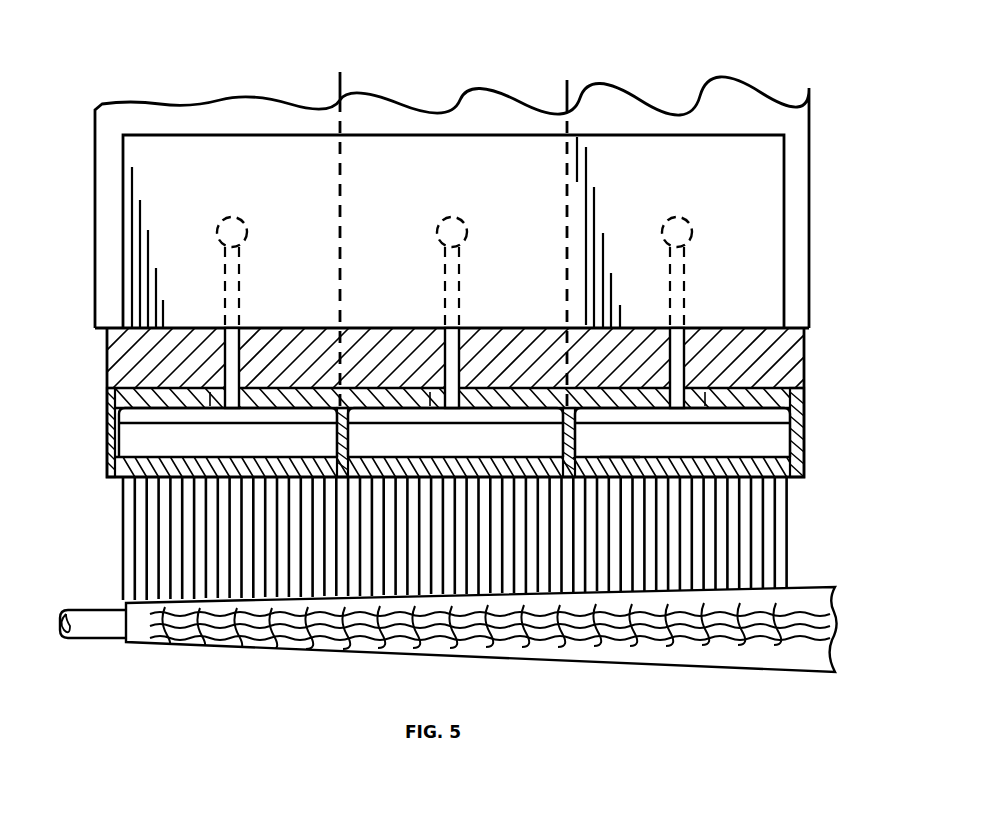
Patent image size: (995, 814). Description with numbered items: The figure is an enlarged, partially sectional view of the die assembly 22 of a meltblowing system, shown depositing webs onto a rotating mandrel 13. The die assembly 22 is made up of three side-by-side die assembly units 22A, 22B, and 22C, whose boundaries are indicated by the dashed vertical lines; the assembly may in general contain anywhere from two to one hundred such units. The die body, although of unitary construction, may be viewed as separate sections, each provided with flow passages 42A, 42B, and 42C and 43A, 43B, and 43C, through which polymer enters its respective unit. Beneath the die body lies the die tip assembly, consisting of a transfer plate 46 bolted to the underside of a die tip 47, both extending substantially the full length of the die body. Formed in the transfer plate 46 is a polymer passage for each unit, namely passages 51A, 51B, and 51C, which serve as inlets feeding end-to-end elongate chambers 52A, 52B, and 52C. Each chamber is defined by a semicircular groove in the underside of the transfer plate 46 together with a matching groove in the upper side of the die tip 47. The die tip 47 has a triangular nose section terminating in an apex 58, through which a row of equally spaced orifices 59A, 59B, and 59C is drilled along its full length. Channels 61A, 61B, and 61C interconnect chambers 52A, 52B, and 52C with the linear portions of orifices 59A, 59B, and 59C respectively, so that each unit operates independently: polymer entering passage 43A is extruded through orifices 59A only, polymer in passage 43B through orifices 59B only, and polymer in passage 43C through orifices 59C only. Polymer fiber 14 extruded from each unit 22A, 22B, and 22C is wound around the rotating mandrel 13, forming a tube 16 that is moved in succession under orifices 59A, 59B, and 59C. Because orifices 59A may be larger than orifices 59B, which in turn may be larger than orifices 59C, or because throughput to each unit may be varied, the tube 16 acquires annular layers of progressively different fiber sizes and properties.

The die assembly 22 is at (383, 44).
The die assembly unit 22A is at (213, 135).
The die assembly unit 22B is at (445, 135).
The die assembly unit 22C is at (680, 135).
The flow passage 42A is at (222, 218).
The flow passage 42B is at (440, 218).
The flow passage 42C is at (664, 218).
The flow passage 43A is at (243, 290).
The flow passage 43B is at (465, 290).
The flow passage 43C is at (690, 290).
The polymer passage 51A is at (218, 397).
The polymer passage 51B is at (425, 400).
The polymer passage 51C is at (700, 392).
The elongate chamber 52A is at (262, 413).
The elongate chamber 52B is at (480, 413).
The elongate chamber 52C is at (628, 413).
The transfer plate 46 is at (803, 393).
The die tip 47 is at (107, 425).
The channel 61A is at (150, 440).
The channel 61B is at (435, 440).
The channel 61C is at (765, 442).
The apex 58 is at (610, 458).
The orifices 59A is at (178, 478).
The orifices 59B is at (480, 460).
The orifices 59C is at (715, 478).
The polymer fiber 14 is at (123, 557).
The rotating mandrel 13 is at (98, 638).
The tube 16 is at (307, 652).